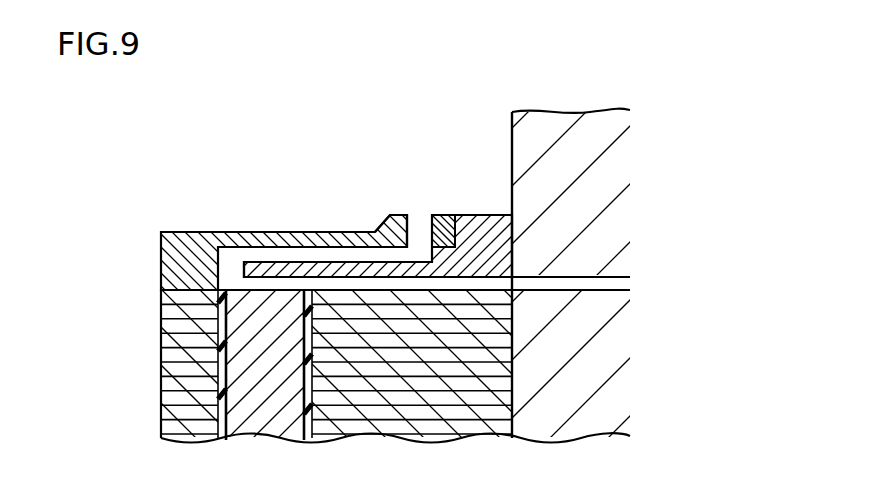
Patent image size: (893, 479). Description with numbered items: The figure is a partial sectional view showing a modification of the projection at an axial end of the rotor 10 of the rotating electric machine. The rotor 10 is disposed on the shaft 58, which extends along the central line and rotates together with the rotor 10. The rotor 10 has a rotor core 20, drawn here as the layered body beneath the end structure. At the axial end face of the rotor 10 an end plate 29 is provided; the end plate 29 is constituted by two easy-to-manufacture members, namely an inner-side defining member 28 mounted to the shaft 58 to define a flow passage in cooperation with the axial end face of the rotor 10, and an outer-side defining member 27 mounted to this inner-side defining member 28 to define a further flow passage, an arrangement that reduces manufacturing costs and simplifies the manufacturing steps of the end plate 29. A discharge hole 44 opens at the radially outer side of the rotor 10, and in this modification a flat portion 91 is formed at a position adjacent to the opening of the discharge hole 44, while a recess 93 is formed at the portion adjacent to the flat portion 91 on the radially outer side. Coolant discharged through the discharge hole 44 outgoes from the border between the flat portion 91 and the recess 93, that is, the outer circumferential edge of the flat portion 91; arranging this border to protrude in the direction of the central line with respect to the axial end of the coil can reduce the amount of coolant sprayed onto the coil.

The rotor 10 is at (332, 365).
The rotor core 20 is at (178, 383).
The outer-side defining member 27 is at (282, 227).
The inner-side defining member 28 is at (243, 270).
The end plate 29 is at (272, 227).
The discharge hole 44 is at (410, 232).
The shaft 58 is at (570, 130).
The flat portion 91 is at (400, 214).
The recess 93 is at (305, 232).